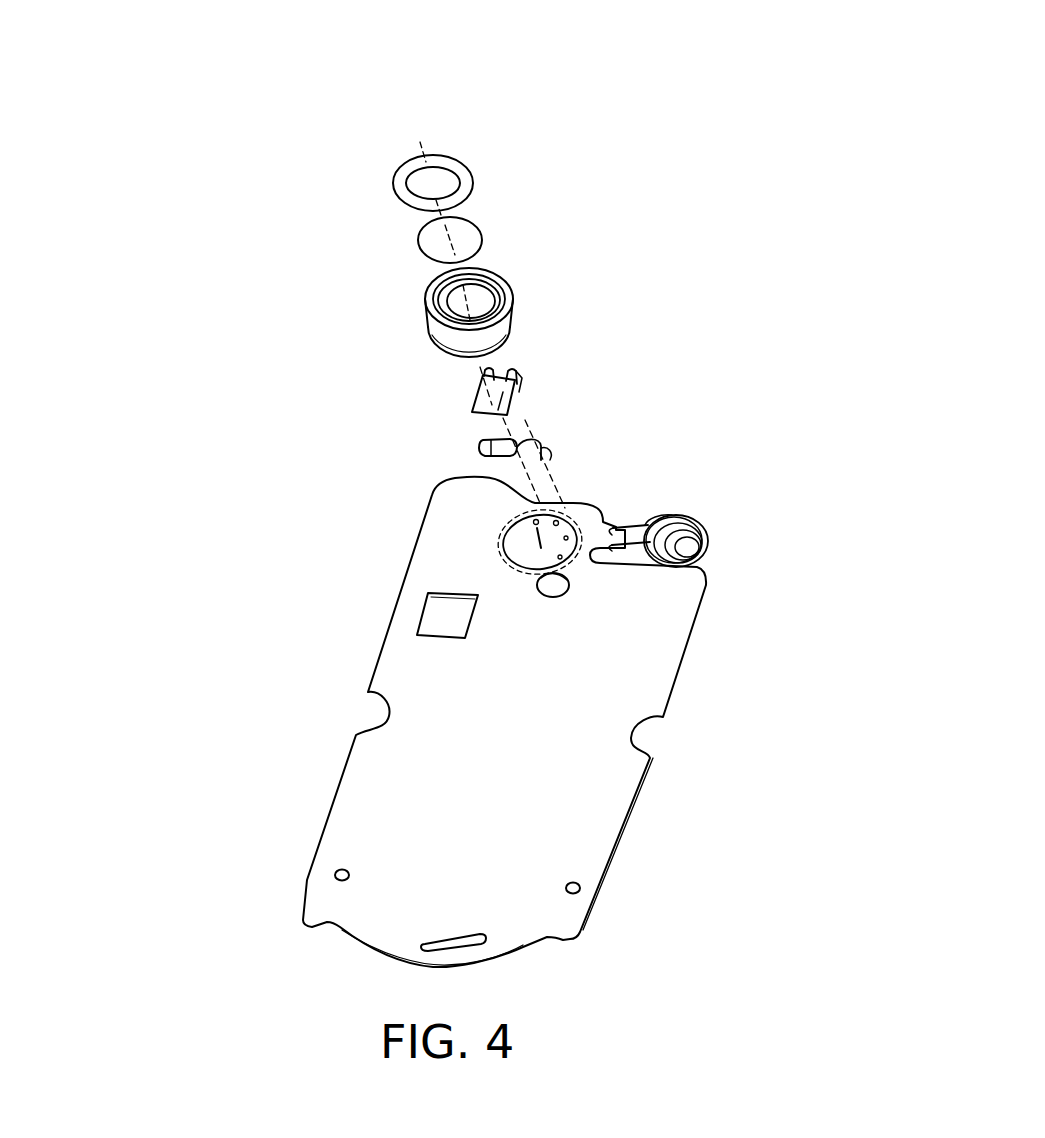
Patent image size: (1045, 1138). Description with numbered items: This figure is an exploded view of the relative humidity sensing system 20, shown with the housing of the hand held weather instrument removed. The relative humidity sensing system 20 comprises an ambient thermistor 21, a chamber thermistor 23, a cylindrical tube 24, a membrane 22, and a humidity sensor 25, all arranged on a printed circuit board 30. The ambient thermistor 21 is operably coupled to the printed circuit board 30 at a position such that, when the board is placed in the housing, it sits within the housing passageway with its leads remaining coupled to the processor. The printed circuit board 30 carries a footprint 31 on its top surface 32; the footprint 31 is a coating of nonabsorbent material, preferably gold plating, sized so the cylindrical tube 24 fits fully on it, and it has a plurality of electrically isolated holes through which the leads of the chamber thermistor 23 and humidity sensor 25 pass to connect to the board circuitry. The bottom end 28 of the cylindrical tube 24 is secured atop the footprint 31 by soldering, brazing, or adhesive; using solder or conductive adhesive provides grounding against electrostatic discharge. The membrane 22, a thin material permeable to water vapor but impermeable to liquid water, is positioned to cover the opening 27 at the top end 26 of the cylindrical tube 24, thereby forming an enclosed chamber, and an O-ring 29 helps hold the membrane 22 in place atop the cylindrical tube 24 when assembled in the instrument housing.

The relative humidity sensing system 20 is at (798, 188).
The ambient thermistor 21 is at (714, 530).
The membrane 22 is at (468, 230).
The chamber thermistor 23 is at (481, 398).
The cylindrical tube 24 is at (506, 328).
The humidity sensor 25 is at (478, 444).
The top end 26 is at (436, 300).
The opening 27 is at (497, 273).
The bottom end 28 is at (507, 340).
The O-ring 29 is at (440, 155).
The printed circuit board 30 is at (414, 540).
The footprint 31 is at (517, 556).
The top surface 32 is at (653, 677).